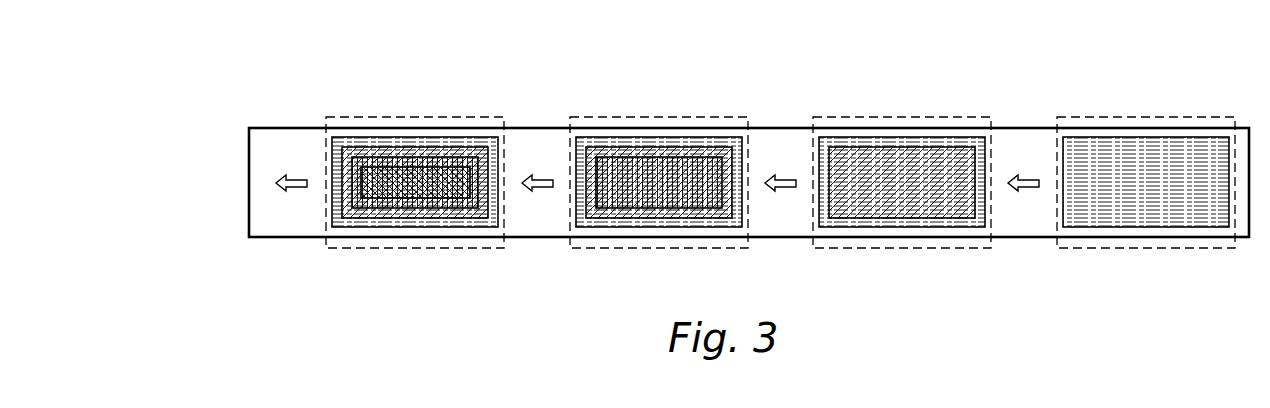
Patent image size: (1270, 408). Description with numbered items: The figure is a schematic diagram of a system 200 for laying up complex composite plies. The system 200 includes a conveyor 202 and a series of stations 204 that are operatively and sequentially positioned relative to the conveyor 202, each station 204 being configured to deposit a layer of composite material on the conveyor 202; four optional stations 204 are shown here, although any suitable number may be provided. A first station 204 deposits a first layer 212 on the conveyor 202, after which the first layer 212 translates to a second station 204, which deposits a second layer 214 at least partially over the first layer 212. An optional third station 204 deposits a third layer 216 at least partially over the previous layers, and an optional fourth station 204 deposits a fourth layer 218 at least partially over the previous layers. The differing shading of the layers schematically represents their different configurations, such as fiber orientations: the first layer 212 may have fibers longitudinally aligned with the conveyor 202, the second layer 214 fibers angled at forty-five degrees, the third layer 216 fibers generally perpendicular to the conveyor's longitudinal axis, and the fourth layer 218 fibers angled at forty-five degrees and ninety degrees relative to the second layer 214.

The system for constructing complex composite structures 200 is at (895, 57).
The conveyor 202 is at (273, 128).
The station 204 is at (380, 115).
The first layer 212 is at (408, 137).
The second layer 214 is at (457, 220).
The third layer 216 is at (407, 210).
The fourth layer 218 is at (375, 198).